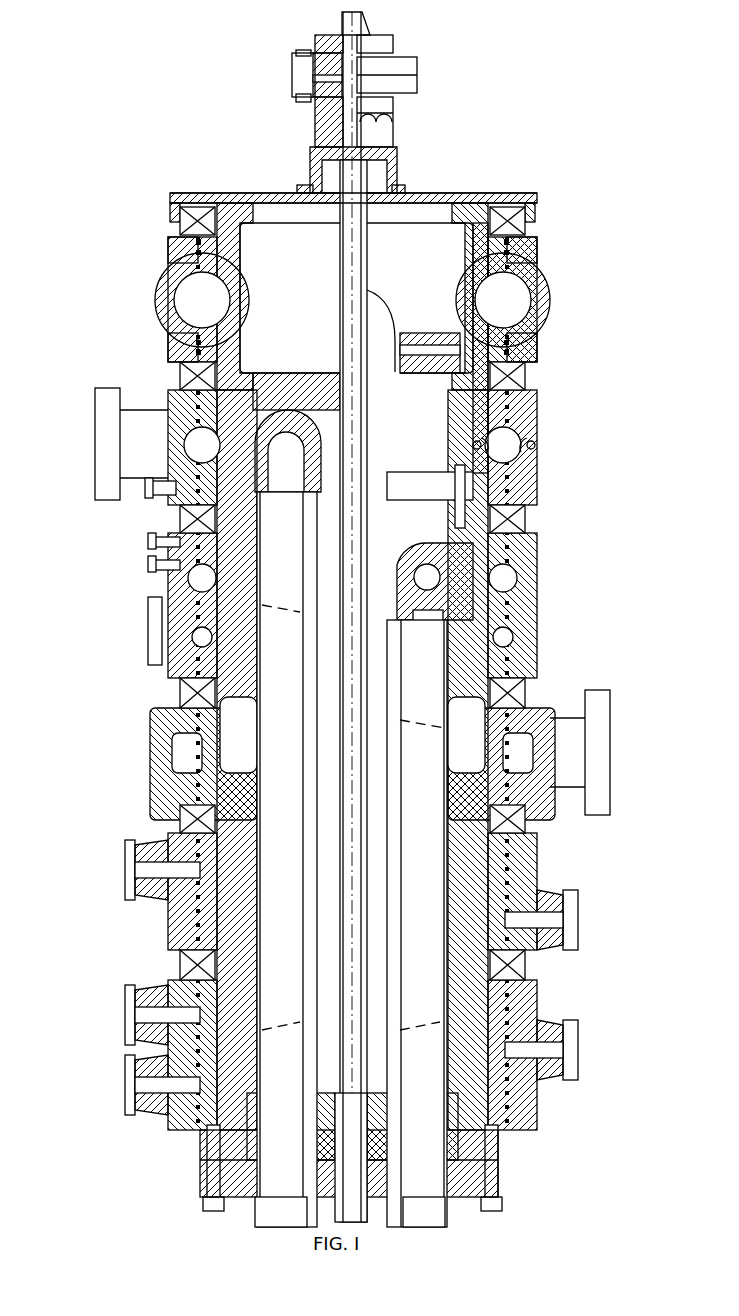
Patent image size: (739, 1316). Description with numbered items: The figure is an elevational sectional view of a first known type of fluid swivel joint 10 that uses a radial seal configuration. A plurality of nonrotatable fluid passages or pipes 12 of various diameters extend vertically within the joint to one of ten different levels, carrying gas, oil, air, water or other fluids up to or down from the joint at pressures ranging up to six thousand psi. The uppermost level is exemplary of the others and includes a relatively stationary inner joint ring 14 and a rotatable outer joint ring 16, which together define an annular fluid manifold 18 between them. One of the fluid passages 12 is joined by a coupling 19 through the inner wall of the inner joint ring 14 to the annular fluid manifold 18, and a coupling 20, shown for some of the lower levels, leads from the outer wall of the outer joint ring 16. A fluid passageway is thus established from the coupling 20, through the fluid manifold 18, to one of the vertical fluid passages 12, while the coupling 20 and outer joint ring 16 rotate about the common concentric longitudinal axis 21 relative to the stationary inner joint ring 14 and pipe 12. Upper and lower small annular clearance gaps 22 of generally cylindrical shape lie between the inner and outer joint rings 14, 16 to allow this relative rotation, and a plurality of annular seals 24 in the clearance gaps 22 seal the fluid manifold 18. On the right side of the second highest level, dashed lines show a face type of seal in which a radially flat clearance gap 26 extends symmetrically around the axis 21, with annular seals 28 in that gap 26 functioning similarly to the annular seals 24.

The fluid swivel joint 10 is at (447, 136).
The fluid passages or pipes 12 is at (384, 438).
The inner joint ring 14 is at (236, 278).
The outer joint ring 16 is at (155, 295).
The annular fluid manifold 18 is at (214, 309).
The coupling 19 is at (288, 246).
The coupling 20 is at (151, 451).
The common concentric longitudinal axis 21 is at (353, 256).
The annular clearance gaps 22 is at (178, 262).
The annular seals 24 is at (195, 242).
The clearance gap 26 is at (473, 448).
The annular seals 28 is at (475, 440).